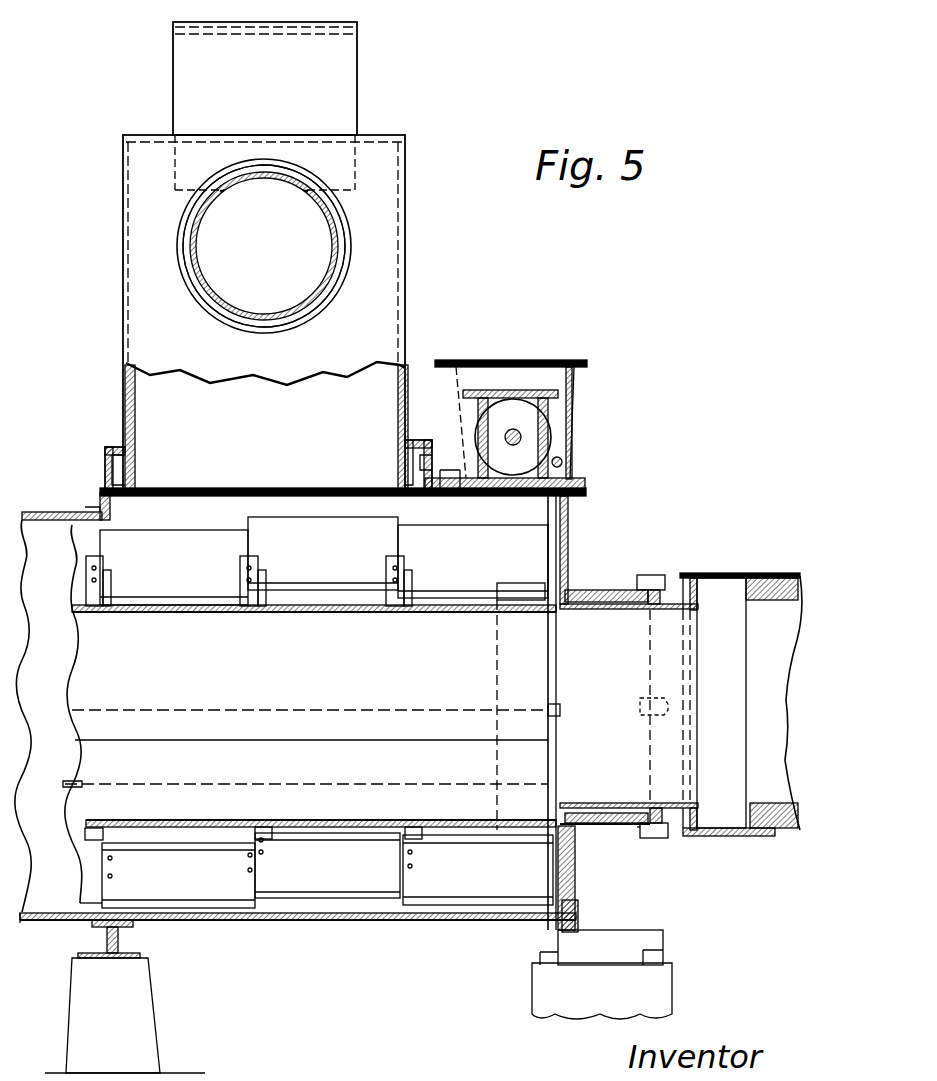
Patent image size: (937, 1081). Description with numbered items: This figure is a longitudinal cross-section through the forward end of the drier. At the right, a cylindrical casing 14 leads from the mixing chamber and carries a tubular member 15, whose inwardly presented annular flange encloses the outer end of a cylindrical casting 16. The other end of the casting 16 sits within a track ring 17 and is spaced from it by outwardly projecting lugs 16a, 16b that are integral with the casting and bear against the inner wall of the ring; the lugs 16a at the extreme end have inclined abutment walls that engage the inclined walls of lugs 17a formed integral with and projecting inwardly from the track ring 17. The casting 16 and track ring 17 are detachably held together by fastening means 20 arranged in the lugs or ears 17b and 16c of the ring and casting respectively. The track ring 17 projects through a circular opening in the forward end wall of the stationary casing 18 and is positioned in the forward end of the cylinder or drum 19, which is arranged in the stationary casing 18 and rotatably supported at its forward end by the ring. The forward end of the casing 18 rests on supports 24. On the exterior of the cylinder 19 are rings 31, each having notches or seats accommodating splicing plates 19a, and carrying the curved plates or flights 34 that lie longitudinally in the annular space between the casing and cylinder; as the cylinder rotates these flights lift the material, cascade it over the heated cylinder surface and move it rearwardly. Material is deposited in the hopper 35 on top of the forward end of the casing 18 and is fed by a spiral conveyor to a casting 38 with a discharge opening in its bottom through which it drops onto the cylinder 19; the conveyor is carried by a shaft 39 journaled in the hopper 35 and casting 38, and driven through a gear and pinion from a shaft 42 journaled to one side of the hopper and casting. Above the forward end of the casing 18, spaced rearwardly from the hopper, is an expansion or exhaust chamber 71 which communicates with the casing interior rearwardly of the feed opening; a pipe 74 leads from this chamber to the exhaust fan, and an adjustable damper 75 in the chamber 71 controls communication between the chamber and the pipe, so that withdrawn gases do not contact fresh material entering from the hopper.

The cylindrical casing 14 is at (758, 832).
The tubular member 15 is at (723, 575).
The cylindrical casting 16 is at (680, 736).
The lugs 16a is at (578, 608).
The lugs 16b is at (628, 608).
The lugs or ears 16c is at (676, 838).
The track ring 17 is at (600, 590).
The lugs 17a is at (540, 606).
The lugs or ears 17b is at (650, 838).
The stationary casing 18 is at (28, 515).
The cylinder or drum 19 is at (205, 613).
The splicing plates 19a is at (74, 790).
The fastening means 20 is at (655, 578).
The supports 24 is at (602, 959).
The rings 31 is at (365, 612).
The curved plates or flights 34 is at (326, 712).
The hopper 35 is at (478, 376).
The casting 38 is at (552, 437).
The shaft 39 is at (520, 433).
The shaft 42 is at (565, 462).
The expansion or exhaust chamber 71 is at (150, 290).
The pipe 74 is at (328, 314).
The adjustable damper 75 is at (265, 106).